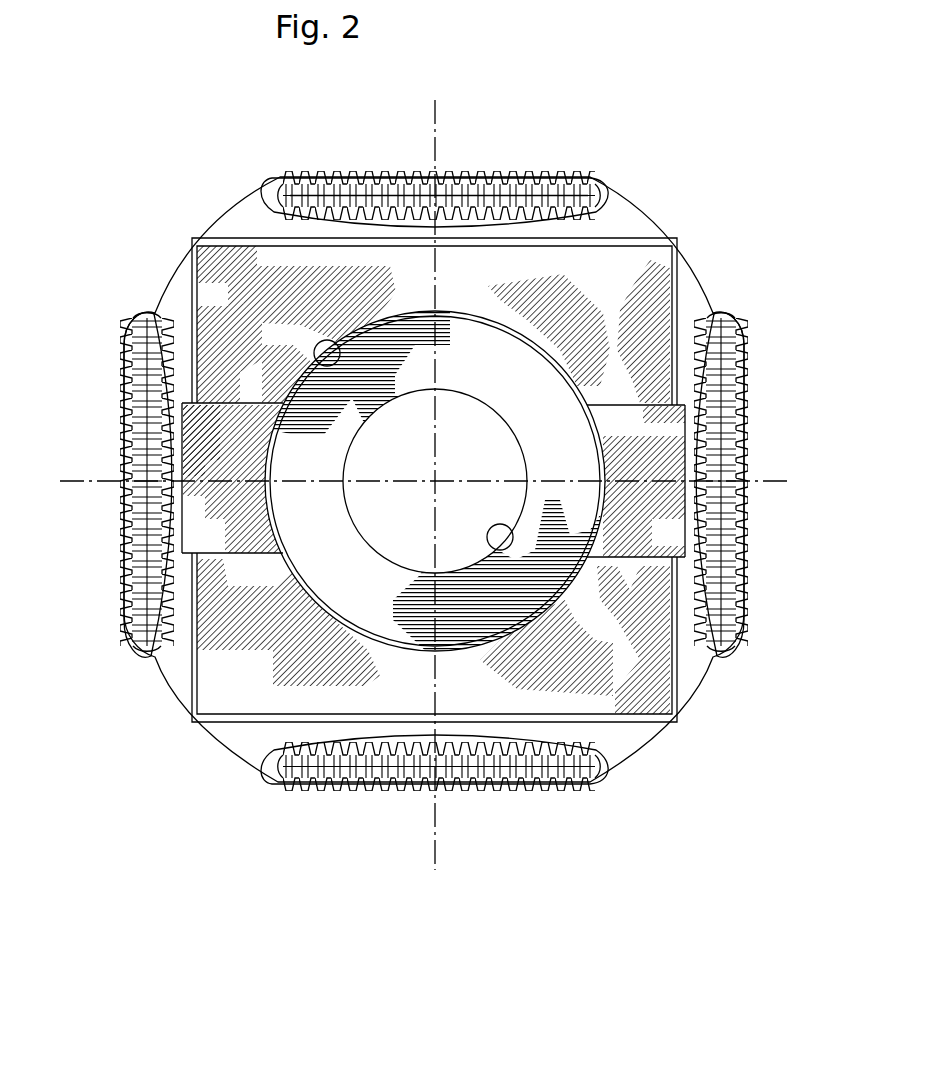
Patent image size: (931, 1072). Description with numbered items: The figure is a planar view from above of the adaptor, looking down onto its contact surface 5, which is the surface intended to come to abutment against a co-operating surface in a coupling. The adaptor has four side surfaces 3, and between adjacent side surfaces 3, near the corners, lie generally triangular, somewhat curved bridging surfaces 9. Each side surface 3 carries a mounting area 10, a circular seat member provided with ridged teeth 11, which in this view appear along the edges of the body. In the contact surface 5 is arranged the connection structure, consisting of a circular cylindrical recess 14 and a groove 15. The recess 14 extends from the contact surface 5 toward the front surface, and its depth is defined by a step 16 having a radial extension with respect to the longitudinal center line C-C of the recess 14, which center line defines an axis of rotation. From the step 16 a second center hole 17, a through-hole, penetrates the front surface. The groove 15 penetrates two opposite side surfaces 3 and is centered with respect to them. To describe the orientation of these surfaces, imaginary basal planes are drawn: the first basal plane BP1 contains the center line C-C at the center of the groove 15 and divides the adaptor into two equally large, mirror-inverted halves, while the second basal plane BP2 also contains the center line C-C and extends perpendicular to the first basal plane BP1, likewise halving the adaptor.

The side surfaces 3 is at (250, 217).
The contact surface 5 is at (650, 270).
The bridging surfaces 9 is at (637, 210).
The mounting area 10 is at (483, 158).
The ridged teeth 11 is at (405, 170).
The circular cylindrical recess 14 is at (308, 358).
The groove 15 is at (653, 440).
The step 16 is at (333, 550).
The second center hole 17 is at (493, 543).
The longitudinal center line C-C is at (435, 481).
The first basal plane BP1 is at (792, 487).
The second basal plane BP2 is at (450, 840).